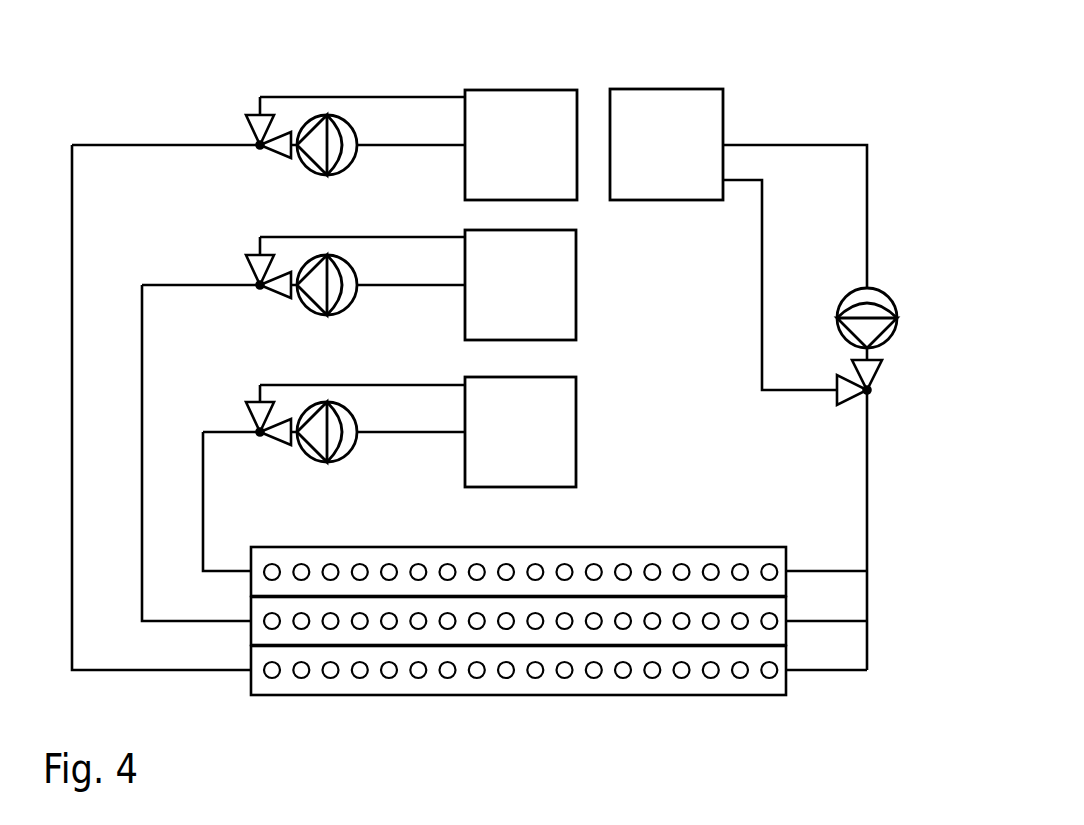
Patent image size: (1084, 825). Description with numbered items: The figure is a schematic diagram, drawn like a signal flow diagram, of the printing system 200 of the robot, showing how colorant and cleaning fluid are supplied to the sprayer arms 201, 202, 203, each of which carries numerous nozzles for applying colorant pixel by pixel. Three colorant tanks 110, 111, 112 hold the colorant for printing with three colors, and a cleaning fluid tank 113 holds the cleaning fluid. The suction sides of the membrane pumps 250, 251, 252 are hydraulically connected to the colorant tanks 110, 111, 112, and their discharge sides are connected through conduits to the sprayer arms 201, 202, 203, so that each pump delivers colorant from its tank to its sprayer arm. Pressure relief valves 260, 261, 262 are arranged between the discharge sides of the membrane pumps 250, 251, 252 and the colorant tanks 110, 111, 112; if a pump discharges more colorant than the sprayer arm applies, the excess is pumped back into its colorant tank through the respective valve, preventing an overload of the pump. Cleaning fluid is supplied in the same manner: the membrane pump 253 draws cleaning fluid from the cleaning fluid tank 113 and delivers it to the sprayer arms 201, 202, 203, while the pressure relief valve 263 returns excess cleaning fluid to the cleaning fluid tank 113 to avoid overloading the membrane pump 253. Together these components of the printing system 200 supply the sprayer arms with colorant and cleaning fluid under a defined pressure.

The printing system 200 is at (197, 68).
The colorant tank 110 is at (577, 448).
The colorant tank 111 is at (577, 288).
The colorant tank 112 is at (532, 90).
The cleaning fluid tank 113 is at (657, 88).
The membrane pump 250 is at (358, 432).
The membrane pump 251 is at (358, 277).
The membrane pump 252 is at (358, 133).
The membrane pump 253 is at (897, 317).
The pressure relief valve 260 is at (249, 403).
The pressure relief valve 261 is at (247, 255).
The pressure relief valve 262 is at (247, 115).
The pressure relief valve 263 is at (873, 380).
The sprayer arm 201 is at (787, 688).
The sprayer arm 202 is at (787, 613).
The sprayer arm 203 is at (730, 547).